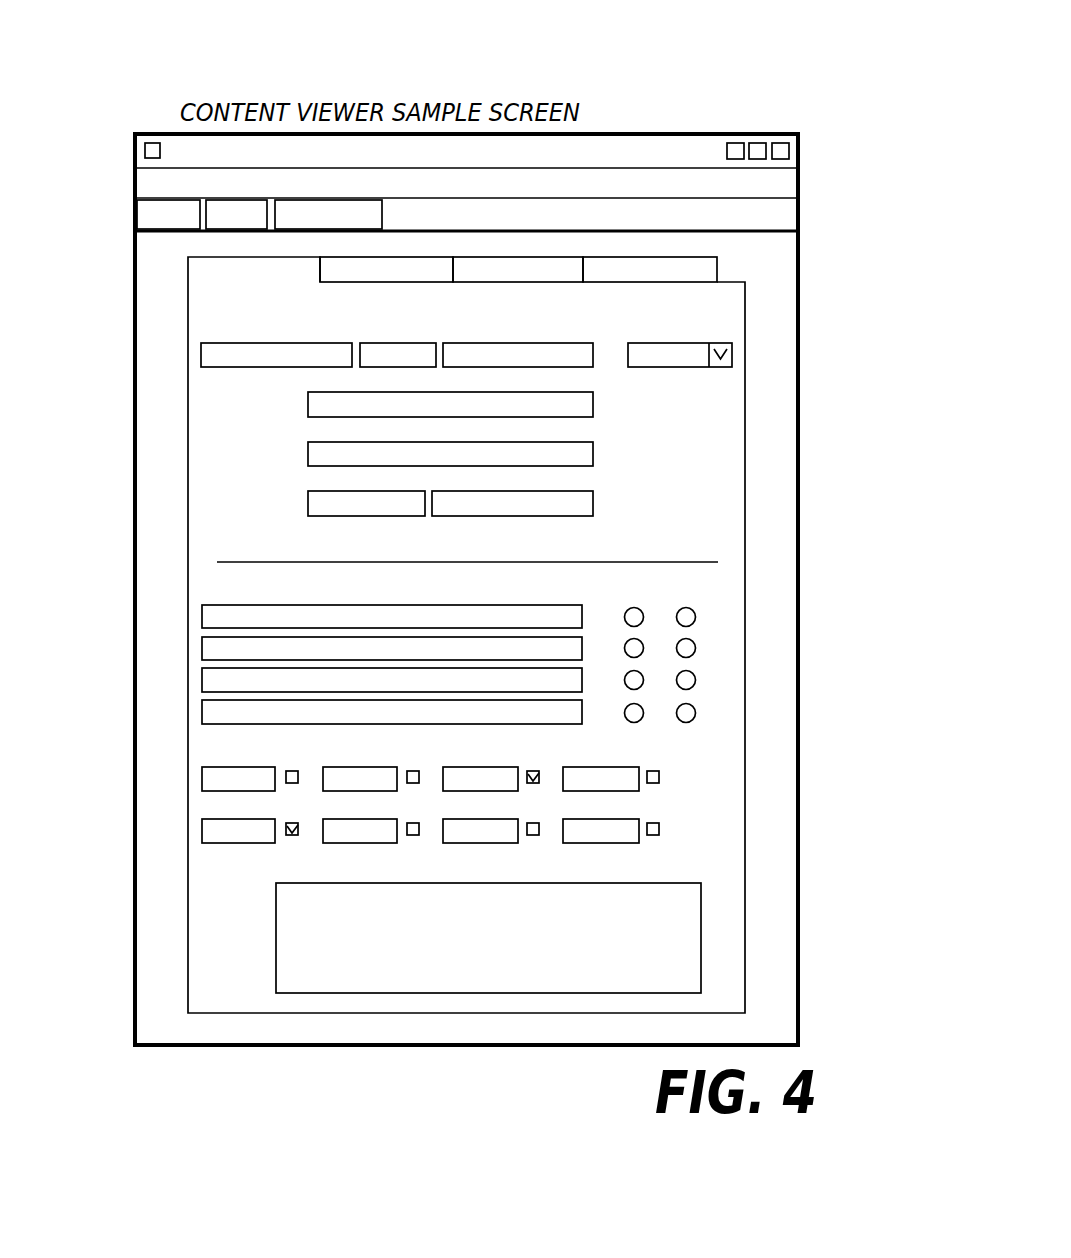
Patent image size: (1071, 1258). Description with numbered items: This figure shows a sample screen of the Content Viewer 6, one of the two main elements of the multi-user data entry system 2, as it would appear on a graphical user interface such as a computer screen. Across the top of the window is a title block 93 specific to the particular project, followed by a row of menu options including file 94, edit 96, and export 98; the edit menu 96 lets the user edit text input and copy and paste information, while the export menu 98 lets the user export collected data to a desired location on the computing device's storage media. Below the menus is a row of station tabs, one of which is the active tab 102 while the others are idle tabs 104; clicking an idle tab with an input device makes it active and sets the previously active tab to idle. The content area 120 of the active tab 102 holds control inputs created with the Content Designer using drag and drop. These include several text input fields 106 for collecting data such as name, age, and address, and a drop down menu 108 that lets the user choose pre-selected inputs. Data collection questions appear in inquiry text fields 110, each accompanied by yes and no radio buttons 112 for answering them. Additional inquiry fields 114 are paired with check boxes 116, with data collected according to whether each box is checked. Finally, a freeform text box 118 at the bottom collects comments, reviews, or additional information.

The multi-user data entry system 2 is at (126, 61).
The Content Viewer 6 is at (657, 109).
The title block 93 is at (147, 183).
The file menu 94 is at (138, 212).
The edit menu 96 is at (270, 200).
The export menu 98 is at (336, 200).
The active tab 102 is at (223, 257).
The idle tabs 104 is at (365, 257).
The text input fields 106 is at (308, 491).
The drop down menu 108 is at (652, 343).
The inquiry text fields 110 is at (202, 702).
The radio buttons 112 is at (644, 617).
The additional inquiry fields 114 is at (202, 773).
The check boxes 116 is at (407, 771).
The freeform text box 118 is at (662, 985).
The content area 120 is at (732, 317).